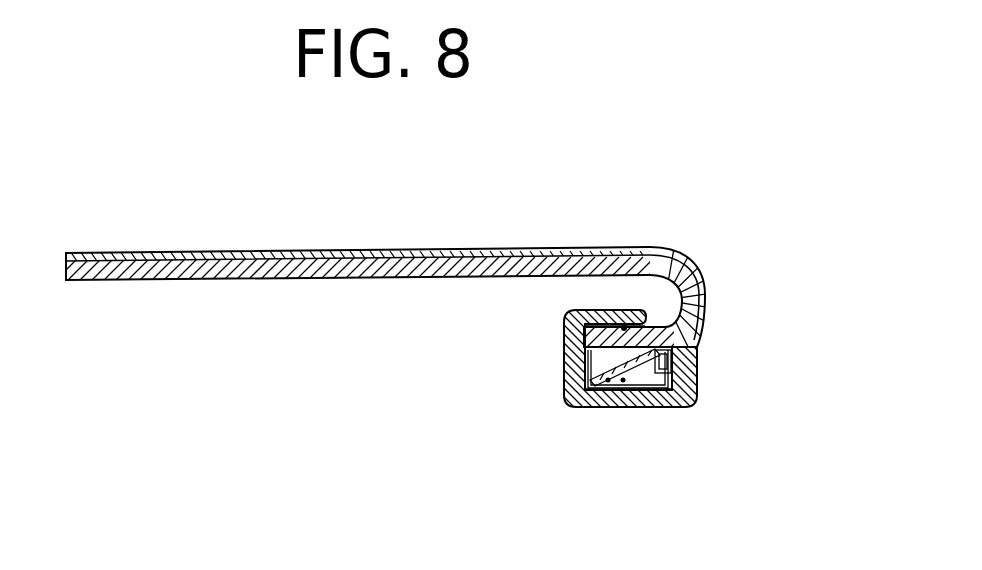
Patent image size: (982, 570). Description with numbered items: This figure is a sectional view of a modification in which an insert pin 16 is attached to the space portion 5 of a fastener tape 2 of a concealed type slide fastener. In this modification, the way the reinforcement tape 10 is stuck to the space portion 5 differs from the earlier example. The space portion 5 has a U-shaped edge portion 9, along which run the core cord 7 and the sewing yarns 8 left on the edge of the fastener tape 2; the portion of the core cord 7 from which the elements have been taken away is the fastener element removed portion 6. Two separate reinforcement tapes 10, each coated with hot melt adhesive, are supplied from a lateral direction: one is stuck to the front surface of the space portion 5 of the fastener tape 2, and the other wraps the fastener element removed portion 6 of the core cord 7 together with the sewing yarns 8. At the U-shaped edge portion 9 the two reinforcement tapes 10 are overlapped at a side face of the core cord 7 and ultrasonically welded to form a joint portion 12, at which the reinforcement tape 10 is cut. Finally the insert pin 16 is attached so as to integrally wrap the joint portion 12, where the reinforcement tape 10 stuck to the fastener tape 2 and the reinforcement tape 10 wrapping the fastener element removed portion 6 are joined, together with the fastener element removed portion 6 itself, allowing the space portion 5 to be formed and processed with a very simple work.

The fastener tape 2 is at (258, 268).
The space portion 5 is at (409, 250).
The fastener element removed portion 6 is at (648, 410).
The core cord 7 is at (585, 405).
The sewing yarns 8 is at (624, 328).
The U-shaped edge portion 9 is at (703, 282).
The reinforcement tape 10 is at (172, 252).
The joint portion 12 is at (698, 358).
The insert pin 16 is at (565, 357).